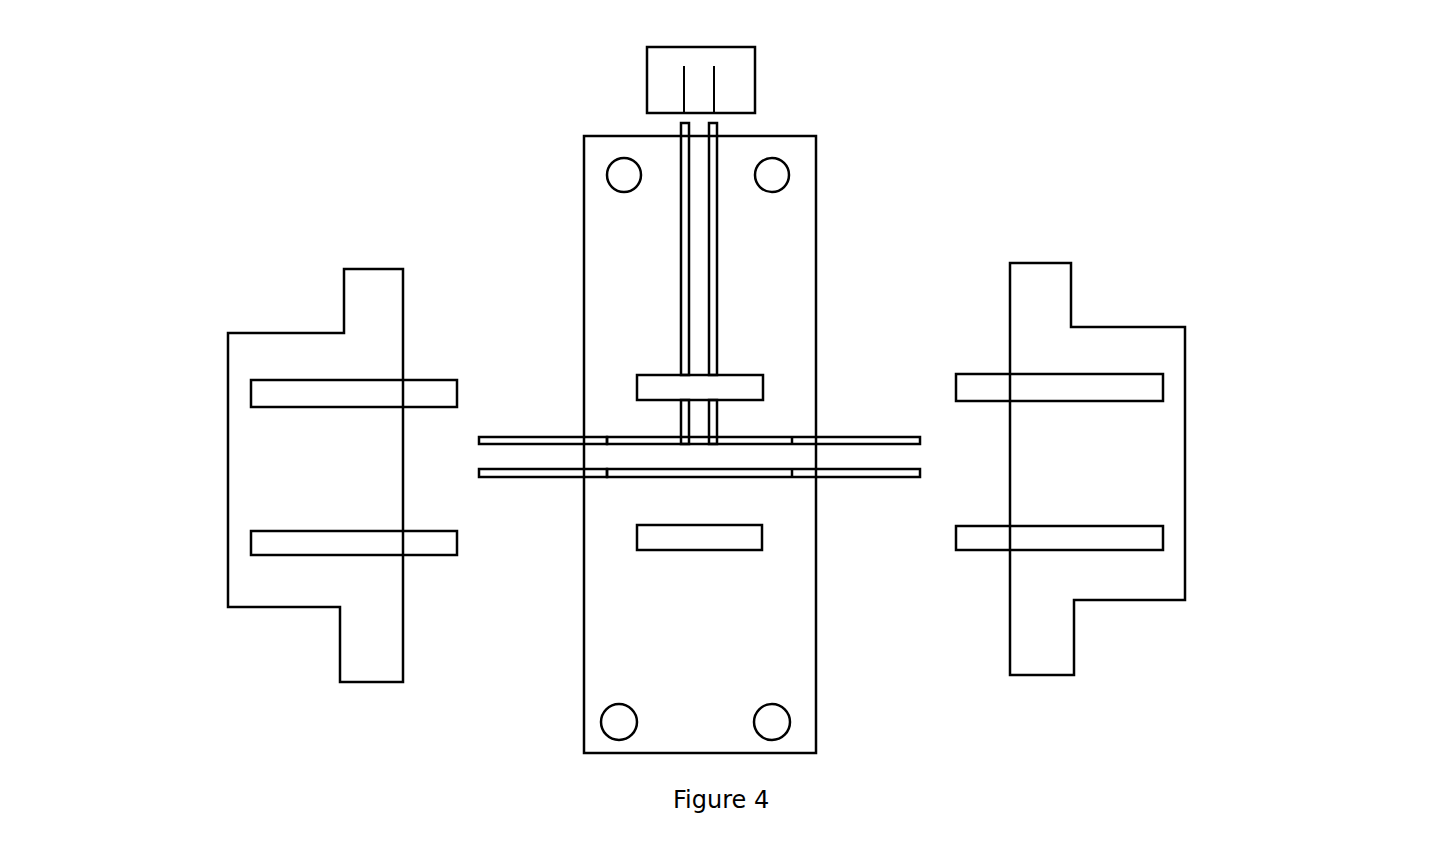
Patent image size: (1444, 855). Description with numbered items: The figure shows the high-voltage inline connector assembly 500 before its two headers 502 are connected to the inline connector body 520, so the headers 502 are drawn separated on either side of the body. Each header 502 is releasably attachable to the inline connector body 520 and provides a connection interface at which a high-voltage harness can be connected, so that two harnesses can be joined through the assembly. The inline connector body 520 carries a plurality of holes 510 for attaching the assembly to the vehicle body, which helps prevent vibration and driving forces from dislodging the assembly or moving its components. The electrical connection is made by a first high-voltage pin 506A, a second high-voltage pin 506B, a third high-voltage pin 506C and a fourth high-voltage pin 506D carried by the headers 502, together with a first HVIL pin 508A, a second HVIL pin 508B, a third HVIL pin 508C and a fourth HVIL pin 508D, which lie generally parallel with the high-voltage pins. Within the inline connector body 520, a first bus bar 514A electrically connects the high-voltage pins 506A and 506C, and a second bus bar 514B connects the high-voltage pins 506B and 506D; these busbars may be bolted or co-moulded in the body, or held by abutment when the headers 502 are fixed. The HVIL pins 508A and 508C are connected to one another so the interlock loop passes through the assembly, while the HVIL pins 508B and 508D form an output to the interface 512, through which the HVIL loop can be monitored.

The high-voltage inline connector assembly 500 is at (258, 116).
The header 502 is at (372, 634).
The first high-voltage pin 506A is at (1163, 538).
The second high-voltage pin 506B is at (1157, 387).
The third high-voltage pin 506C is at (285, 548).
The fourth high-voltage pin 506D is at (270, 387).
The first high-voltage interlock pin 508A is at (917, 477).
The second high-voltage interlock pin 508B is at (919, 435).
The third high-voltage interlock pin 508C is at (478, 477).
The fourth high-voltage interlock pin 508D is at (480, 437).
The hole 510 is at (605, 163).
The interface 512 is at (757, 78).
The first bus bar 514A is at (698, 550).
The second bus bar 514B is at (633, 387).
The inline connector body 520 is at (604, 276).